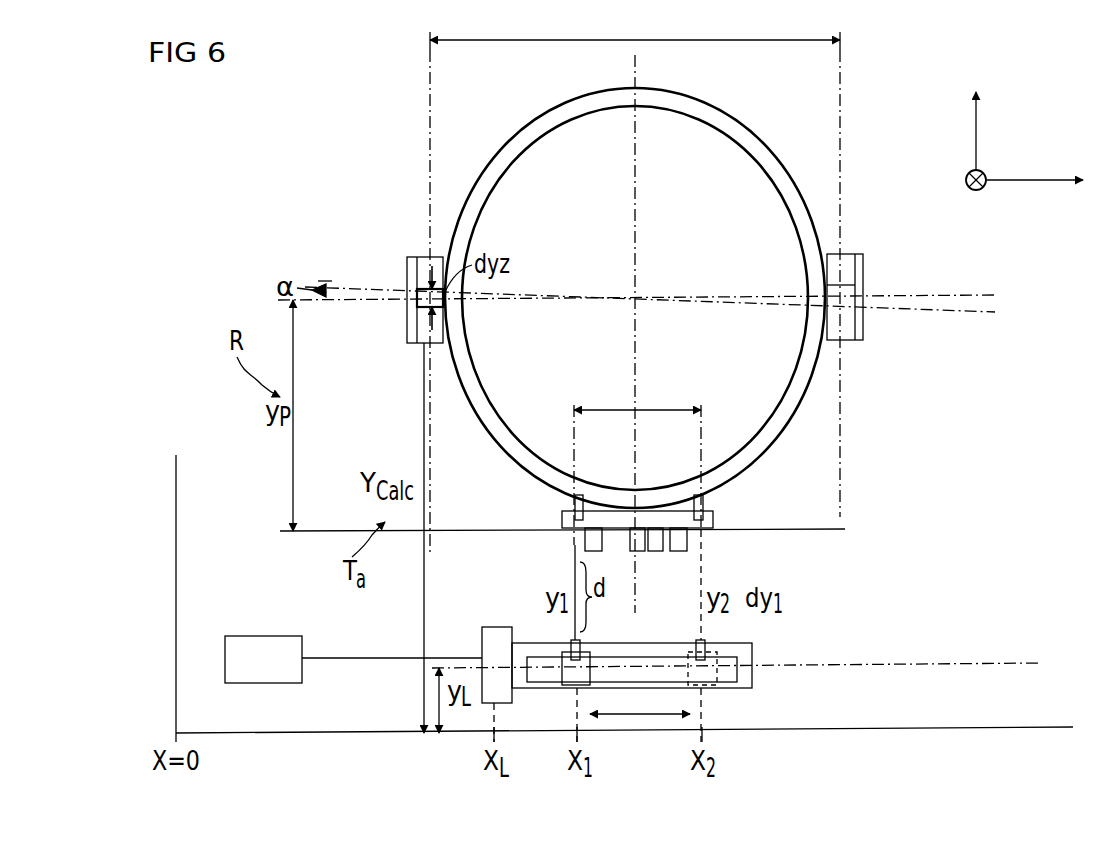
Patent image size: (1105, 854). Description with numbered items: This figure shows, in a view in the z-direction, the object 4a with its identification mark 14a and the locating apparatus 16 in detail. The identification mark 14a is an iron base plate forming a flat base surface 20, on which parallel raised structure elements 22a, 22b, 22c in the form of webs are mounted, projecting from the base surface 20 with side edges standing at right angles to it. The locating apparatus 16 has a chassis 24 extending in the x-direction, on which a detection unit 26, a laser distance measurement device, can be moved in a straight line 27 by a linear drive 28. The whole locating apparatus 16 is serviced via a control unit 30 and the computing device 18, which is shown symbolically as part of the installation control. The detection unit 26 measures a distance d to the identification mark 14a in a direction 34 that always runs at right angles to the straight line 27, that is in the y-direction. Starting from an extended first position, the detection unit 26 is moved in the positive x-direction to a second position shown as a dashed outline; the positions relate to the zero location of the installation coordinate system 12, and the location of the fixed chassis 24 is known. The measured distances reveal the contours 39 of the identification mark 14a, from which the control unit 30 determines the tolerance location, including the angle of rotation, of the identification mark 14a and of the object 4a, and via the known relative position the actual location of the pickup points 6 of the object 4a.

The object 4a is at (530, 172).
The pickup points 6 is at (420, 262).
The installation coordinate system 12 is at (1018, 179).
The identification mark 14a is at (760, 530).
The locating apparatus 16 is at (812, 652).
The computing device 18 is at (497, 627).
The base surface 20 is at (714, 516).
The structure element 22a is at (585, 540).
The structure element 22b is at (656, 552).
The structure element 22c is at (690, 546).
The chassis 24 is at (752, 680).
The detection unit 26 is at (574, 675).
The straight line 27 is at (958, 663).
The linear drive 28 is at (583, 655).
The control unit 30 is at (263, 636).
The measurement direction 34 is at (572, 452).
The contours 39 is at (621, 334).